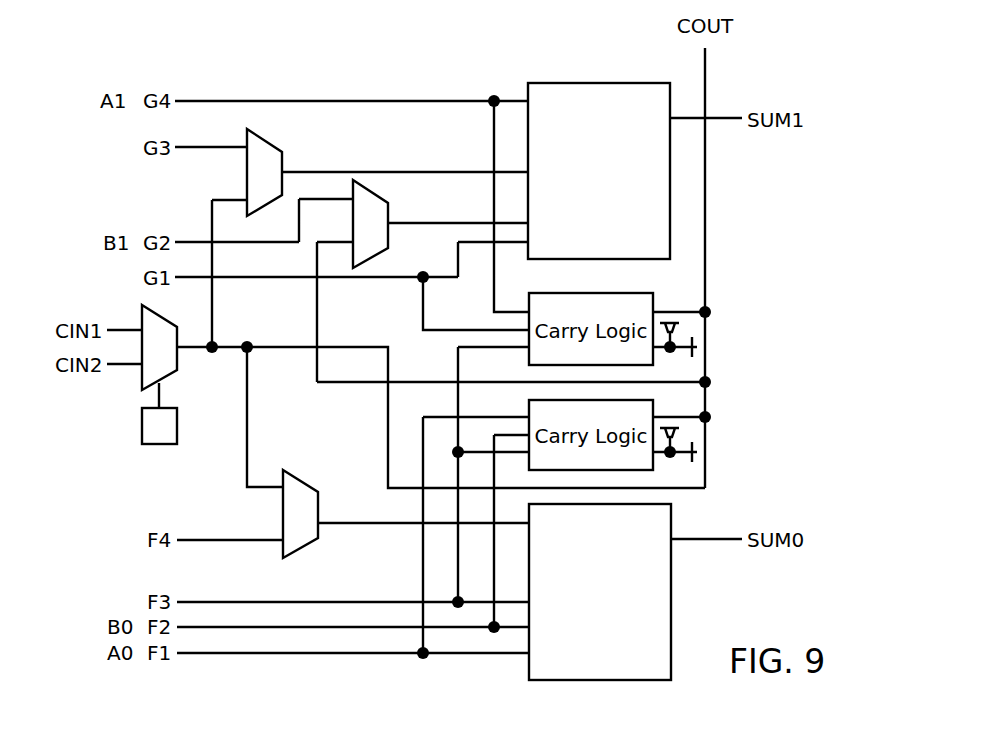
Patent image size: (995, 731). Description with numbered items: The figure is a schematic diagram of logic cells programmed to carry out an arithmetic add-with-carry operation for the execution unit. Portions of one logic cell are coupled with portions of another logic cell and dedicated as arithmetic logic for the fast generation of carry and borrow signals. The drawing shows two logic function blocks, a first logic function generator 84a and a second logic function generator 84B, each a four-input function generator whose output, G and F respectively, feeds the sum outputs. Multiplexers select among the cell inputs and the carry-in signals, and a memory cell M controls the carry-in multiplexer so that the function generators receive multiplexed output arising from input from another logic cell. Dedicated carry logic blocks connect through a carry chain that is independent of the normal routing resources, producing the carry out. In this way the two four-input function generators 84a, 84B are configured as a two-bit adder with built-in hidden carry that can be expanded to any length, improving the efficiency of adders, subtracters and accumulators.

The logic function of G1-G4 84a is at (635, 171).
The logic function of F1-F4 84B is at (635, 592).
The memory cell controlling carry-in multiplexer M is at (159, 413).
The G output of logic function 84a G is at (692, 120).
The F output of logic function 84B F is at (694, 540).